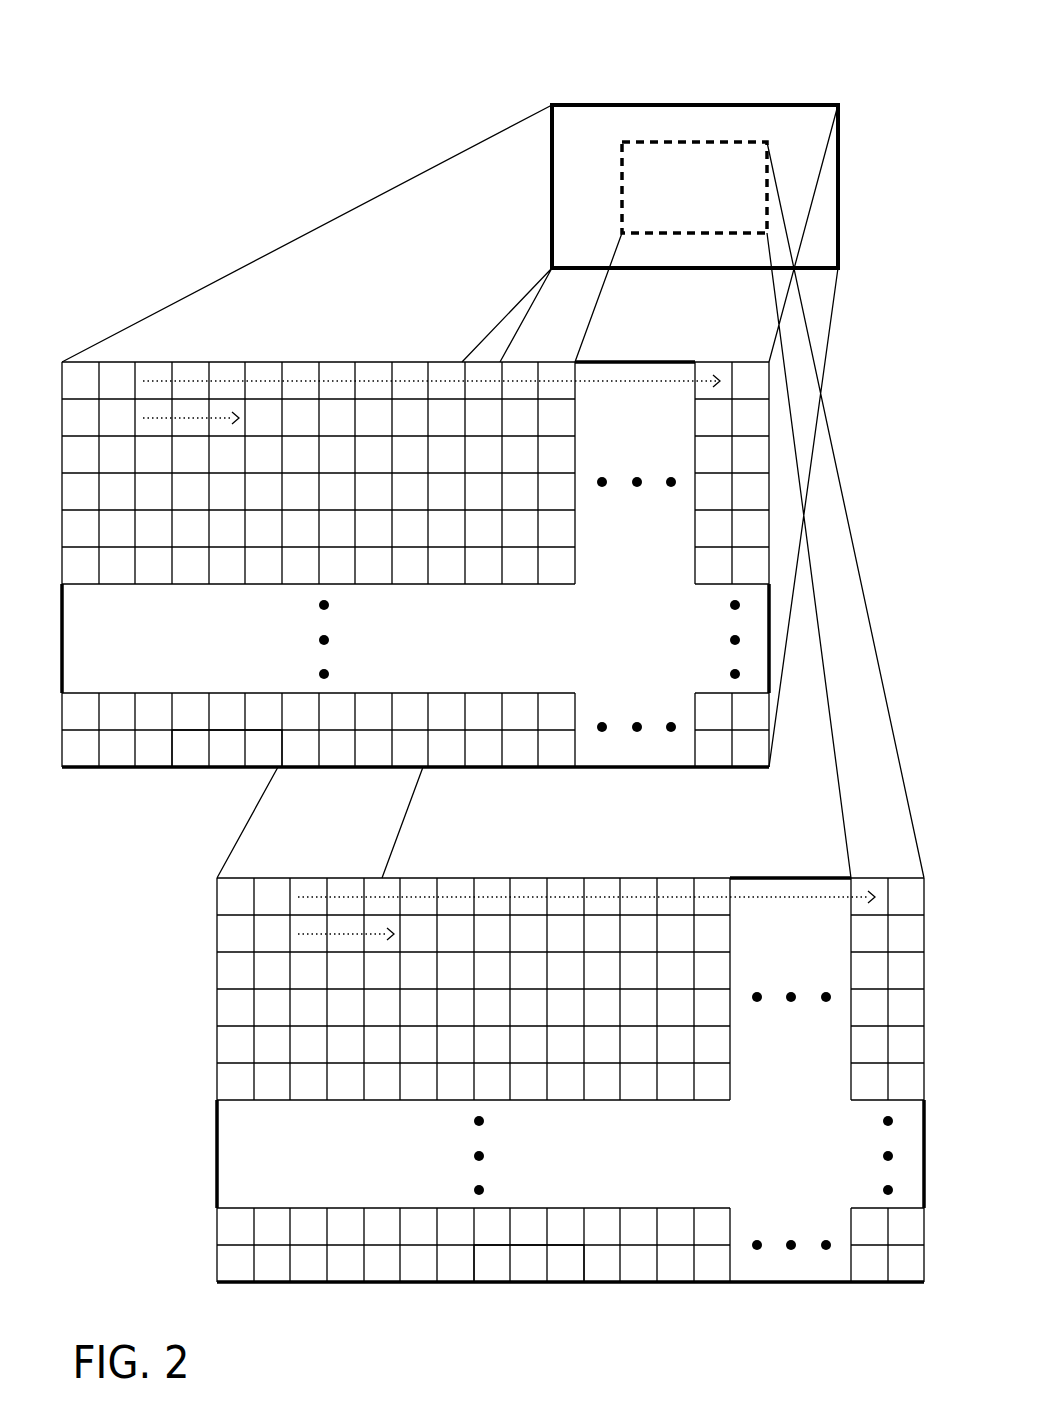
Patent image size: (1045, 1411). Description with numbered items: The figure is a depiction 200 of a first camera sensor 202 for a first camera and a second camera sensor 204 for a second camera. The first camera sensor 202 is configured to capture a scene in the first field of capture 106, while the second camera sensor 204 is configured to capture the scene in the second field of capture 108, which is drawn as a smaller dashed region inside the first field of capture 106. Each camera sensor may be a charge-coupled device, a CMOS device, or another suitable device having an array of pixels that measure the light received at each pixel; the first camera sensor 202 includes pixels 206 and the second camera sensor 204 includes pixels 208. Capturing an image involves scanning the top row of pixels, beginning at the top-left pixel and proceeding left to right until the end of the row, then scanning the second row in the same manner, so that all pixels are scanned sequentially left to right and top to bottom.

The depiction 200 is at (133, 62).
The first field of capture 106 is at (750, 105).
The second field of capture 108 is at (678, 142).
The first camera sensor 202 is at (392, 362).
The second camera sensor 204 is at (752, 878).
The pixels 206 is at (191, 752).
The pixels 208 is at (495, 1270).